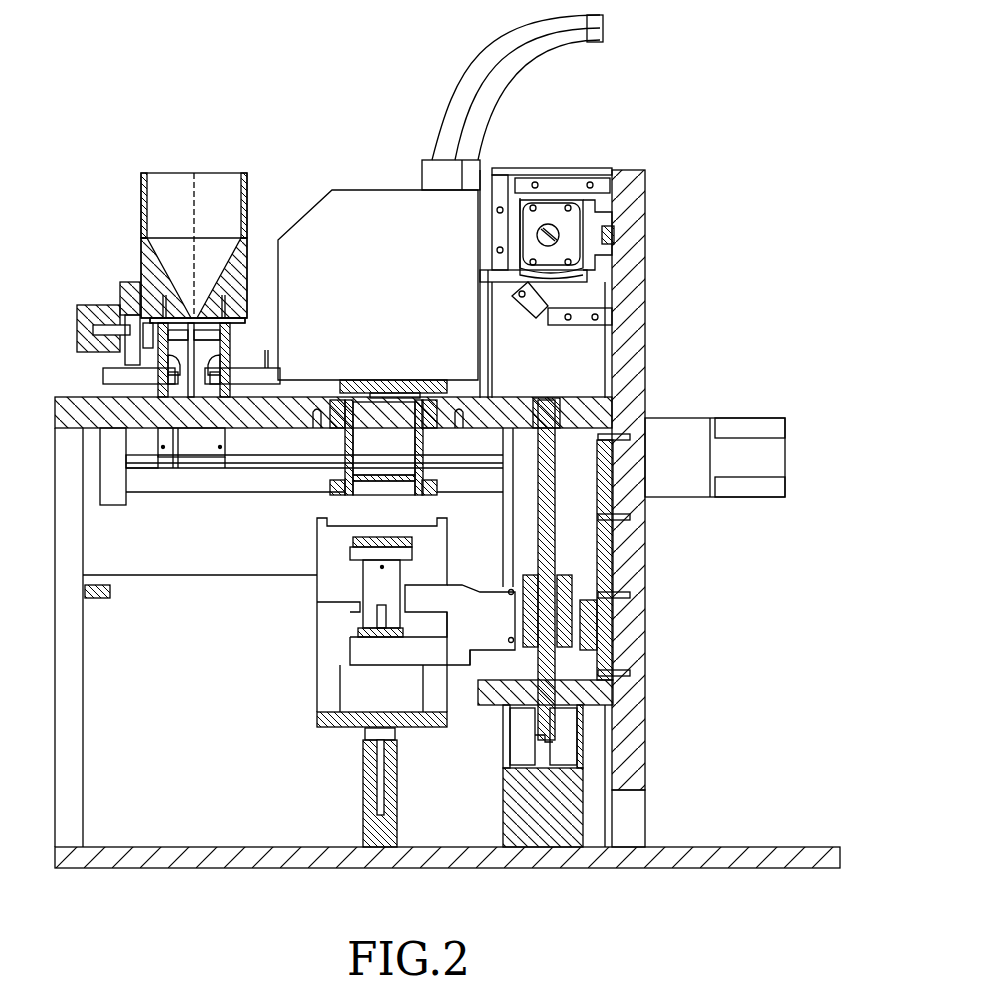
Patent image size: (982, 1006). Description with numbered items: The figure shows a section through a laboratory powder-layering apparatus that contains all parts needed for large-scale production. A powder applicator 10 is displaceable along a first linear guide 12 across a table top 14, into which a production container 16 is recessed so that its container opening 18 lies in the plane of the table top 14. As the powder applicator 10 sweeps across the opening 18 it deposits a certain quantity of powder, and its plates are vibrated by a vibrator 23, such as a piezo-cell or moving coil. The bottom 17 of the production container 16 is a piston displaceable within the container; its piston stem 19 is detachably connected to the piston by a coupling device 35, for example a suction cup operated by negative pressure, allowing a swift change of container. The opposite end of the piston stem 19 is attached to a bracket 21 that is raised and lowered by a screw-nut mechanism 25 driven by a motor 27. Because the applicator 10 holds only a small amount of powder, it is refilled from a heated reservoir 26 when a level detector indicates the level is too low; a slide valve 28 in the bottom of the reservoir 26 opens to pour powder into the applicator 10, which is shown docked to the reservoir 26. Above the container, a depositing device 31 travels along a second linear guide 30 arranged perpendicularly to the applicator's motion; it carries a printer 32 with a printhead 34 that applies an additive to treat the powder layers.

The powder applicator 10 is at (250, 340).
The first linear guide 12 is at (245, 466).
The table top 14 is at (75, 405).
The production container 16 is at (337, 432).
The bottom/piston 17 is at (366, 472).
The container opening 18 is at (410, 392).
The piston stem 19 is at (370, 590).
The bracket 21 is at (400, 646).
The vibrator 23 is at (280, 372).
The screw-nut mechanism 25 is at (575, 592).
The reservoir 26 is at (180, 185).
The motor 27 is at (510, 808).
The slide valve 28 is at (243, 322).
The second linear guide 30 is at (550, 238).
The depositing device 31 is at (338, 180).
The printer 32 is at (437, 176).
The printhead 34 is at (412, 390).
The coupling device 35 is at (410, 546).